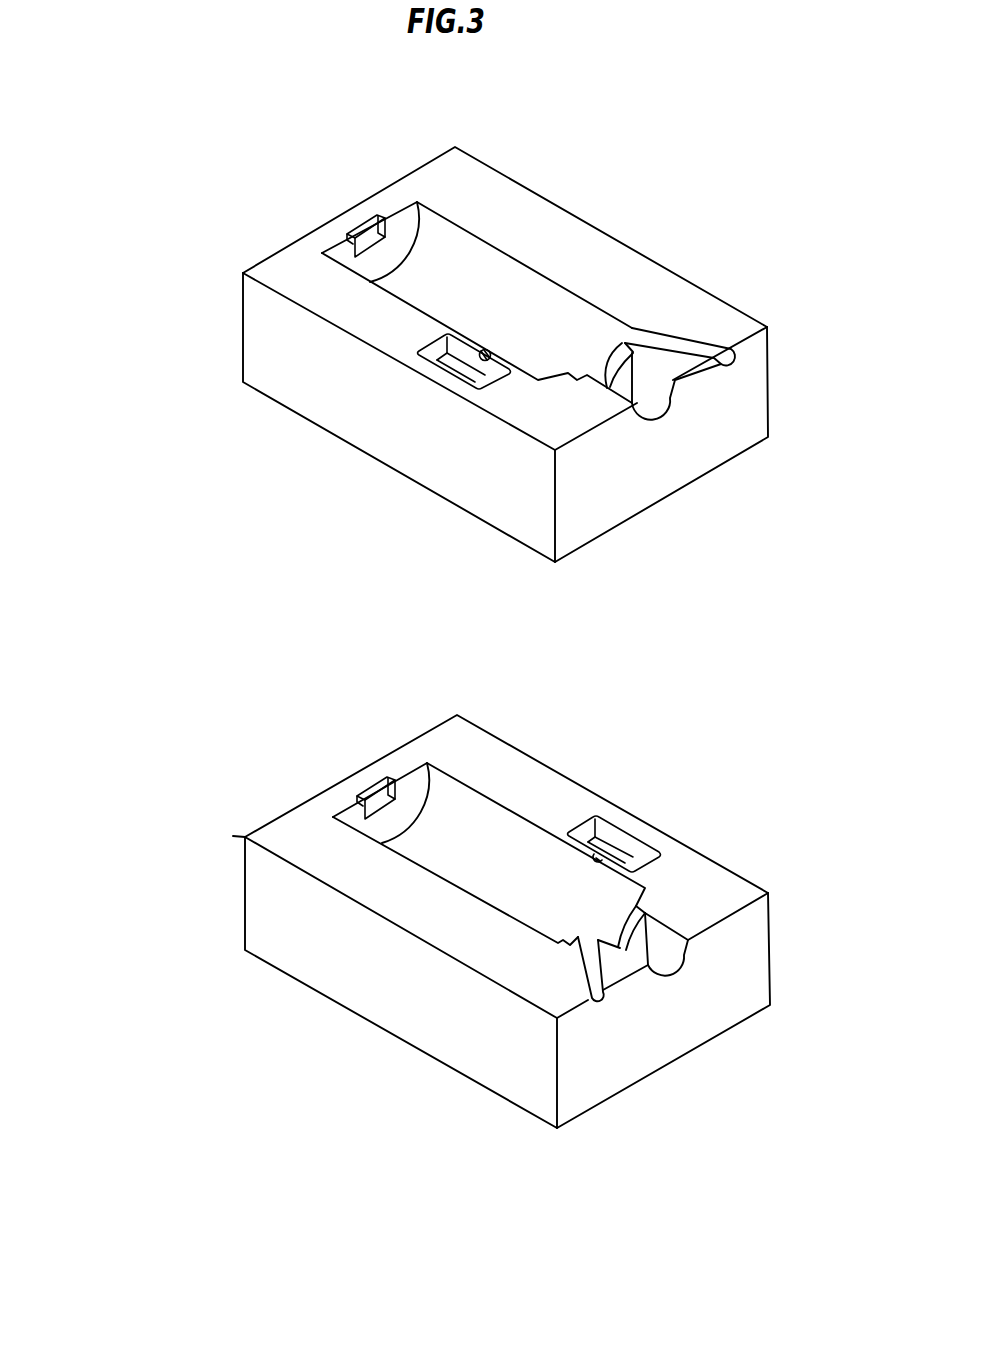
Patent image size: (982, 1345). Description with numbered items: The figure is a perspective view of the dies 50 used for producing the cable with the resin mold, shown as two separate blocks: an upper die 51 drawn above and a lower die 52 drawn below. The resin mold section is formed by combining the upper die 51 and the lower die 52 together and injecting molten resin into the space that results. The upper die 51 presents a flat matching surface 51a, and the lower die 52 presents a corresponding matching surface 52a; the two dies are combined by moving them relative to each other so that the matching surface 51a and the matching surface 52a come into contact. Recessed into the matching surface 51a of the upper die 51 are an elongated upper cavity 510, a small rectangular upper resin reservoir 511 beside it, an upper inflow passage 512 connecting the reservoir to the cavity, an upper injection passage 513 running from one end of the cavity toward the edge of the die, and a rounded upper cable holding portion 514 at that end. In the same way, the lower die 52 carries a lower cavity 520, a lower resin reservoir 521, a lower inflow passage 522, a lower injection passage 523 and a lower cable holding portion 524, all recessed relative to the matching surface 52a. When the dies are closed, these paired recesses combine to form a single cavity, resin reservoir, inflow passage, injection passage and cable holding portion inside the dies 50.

The dies 50 is at (151, 565).
The upper die 51 is at (322, 538).
The lower die 52 is at (327, 662).
The matching surface of the upper die 51a is at (433, 177).
The matching surface of the lower die 52a is at (437, 738).
The upper cavity 510 is at (477, 260).
The upper resin reservoir 511 is at (452, 365).
The upper inflow passage 512 is at (485, 363).
The upper injection passage 513 is at (685, 340).
The upper cable holding portion 514 is at (653, 390).
The lower cavity 520 is at (483, 820).
The lower resin reservoir 521 is at (635, 848).
The lower inflow passage 522 is at (600, 855).
The lower injection passage 523 is at (600, 995).
The lower cable holding portion 524 is at (662, 950).